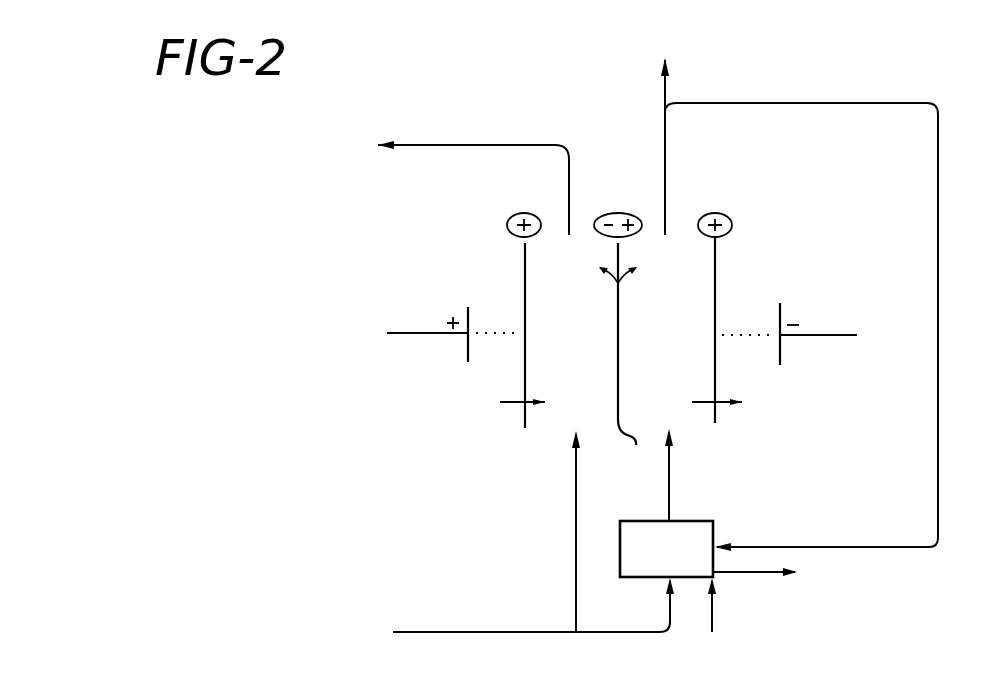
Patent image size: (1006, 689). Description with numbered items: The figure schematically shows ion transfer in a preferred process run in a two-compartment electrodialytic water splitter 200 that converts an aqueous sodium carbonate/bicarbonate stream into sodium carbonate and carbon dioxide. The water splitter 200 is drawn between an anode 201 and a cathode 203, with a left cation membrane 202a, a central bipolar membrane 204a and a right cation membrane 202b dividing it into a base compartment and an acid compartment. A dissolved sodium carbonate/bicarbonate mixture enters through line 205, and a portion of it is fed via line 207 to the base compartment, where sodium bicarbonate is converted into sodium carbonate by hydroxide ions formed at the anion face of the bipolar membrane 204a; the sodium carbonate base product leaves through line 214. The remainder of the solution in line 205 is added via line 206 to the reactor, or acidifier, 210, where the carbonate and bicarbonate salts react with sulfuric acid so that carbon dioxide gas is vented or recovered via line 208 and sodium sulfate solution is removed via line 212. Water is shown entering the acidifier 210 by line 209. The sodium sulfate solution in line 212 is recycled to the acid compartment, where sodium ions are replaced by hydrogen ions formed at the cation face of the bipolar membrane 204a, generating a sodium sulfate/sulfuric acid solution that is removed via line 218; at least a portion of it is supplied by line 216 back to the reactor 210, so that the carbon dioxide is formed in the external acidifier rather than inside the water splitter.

The two-compartment water splitter 200 is at (495, 290).
The anode 201 is at (466, 347).
The cation permselective membrane 202a is at (523, 413).
The cation permselective membrane 202b is at (717, 415).
The cathode 203 is at (782, 350).
The bipolar membrane 204a is at (630, 347).
The line 205 is at (500, 630).
The line 206 is at (629, 630).
The line 207 is at (575, 490).
The line 208 is at (768, 577).
The water inlet line 209 is at (740, 614).
The reactor (acidifier) 210 is at (753, 522).
The line 212 is at (667, 490).
The line 214 is at (470, 148).
The line 216 is at (905, 100).
The line 218 is at (663, 93).